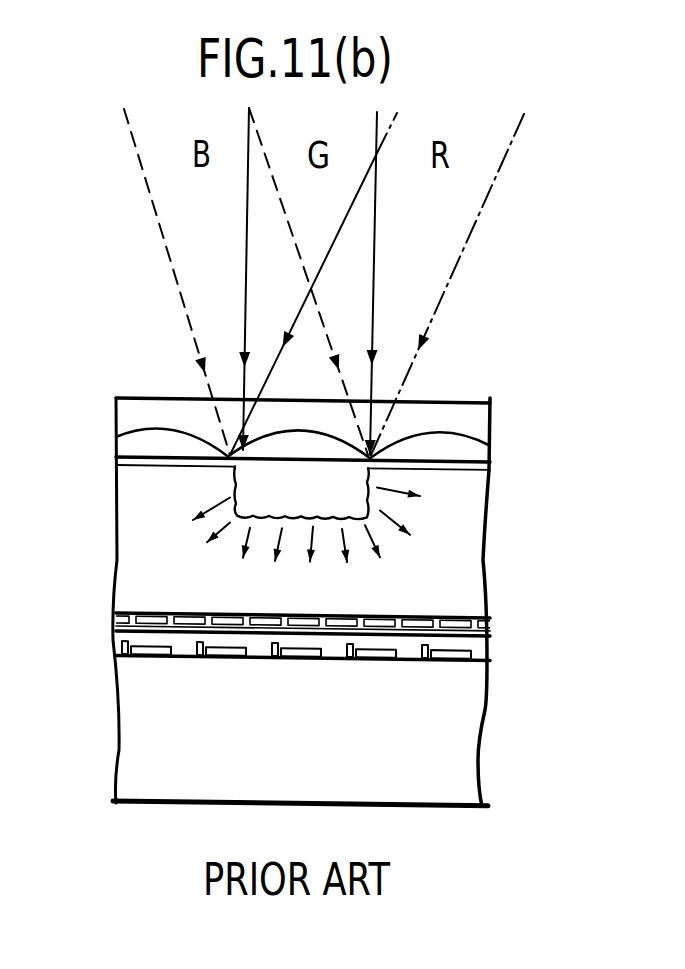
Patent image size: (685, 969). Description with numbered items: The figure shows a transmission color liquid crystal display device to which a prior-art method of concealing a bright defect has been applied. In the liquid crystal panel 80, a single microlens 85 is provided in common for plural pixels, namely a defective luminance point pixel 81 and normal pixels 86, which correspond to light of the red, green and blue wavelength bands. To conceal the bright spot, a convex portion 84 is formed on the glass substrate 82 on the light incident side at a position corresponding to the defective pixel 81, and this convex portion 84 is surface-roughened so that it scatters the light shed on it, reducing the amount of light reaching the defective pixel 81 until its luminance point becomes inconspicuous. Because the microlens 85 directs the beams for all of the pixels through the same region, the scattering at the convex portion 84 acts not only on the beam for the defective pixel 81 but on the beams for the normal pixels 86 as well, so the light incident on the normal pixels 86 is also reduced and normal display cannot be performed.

The liquid crystal panel 80 is at (536, 379).
The defective luminance point pixel 81 is at (297, 658).
The glass substrate 82 is at (127, 495).
The convex portion 84 is at (362, 514).
The microlens 85 is at (308, 432).
The normal pixels 86 is at (218, 658).